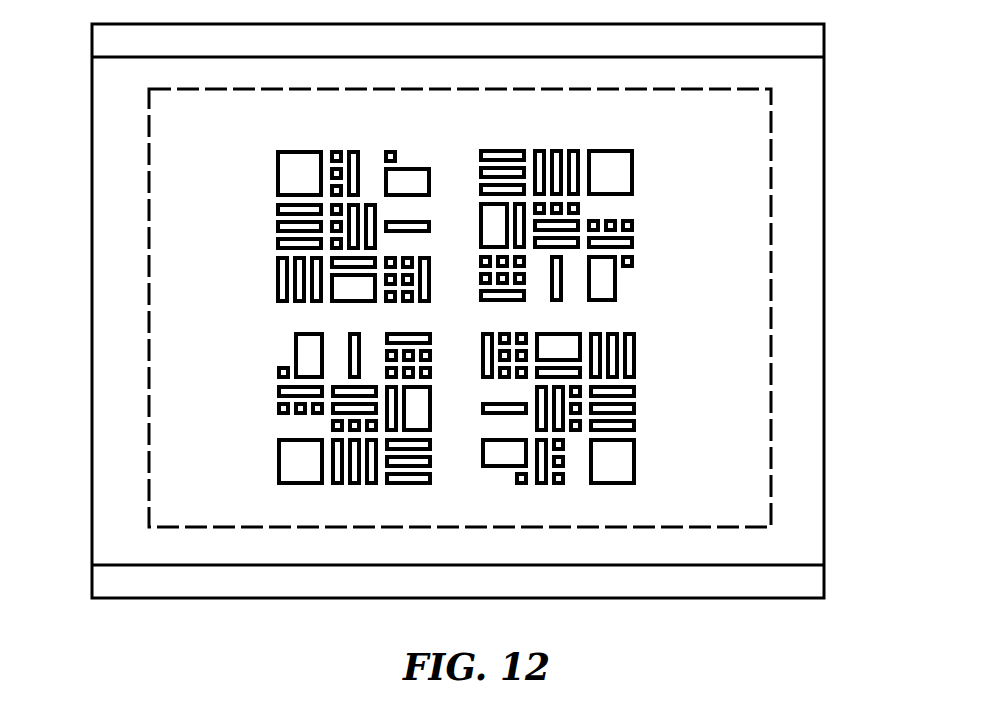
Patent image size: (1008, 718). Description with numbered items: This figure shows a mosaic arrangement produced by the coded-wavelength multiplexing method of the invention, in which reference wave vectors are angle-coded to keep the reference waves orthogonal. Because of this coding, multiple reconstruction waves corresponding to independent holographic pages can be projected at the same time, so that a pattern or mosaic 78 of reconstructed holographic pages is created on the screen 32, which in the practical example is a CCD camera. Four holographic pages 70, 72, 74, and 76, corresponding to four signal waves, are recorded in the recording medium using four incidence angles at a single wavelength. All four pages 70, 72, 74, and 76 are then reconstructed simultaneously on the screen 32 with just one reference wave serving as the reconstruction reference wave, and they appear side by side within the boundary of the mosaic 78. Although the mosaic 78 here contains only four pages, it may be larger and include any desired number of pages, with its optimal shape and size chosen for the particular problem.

The screen 32 is at (824, 312).
The mosaic 78 is at (149, 306).
The holographic page 70 is at (238, 212).
The holographic page 72 is at (247, 437).
The holographic page 74 is at (671, 211).
The holographic page 76 is at (670, 419).